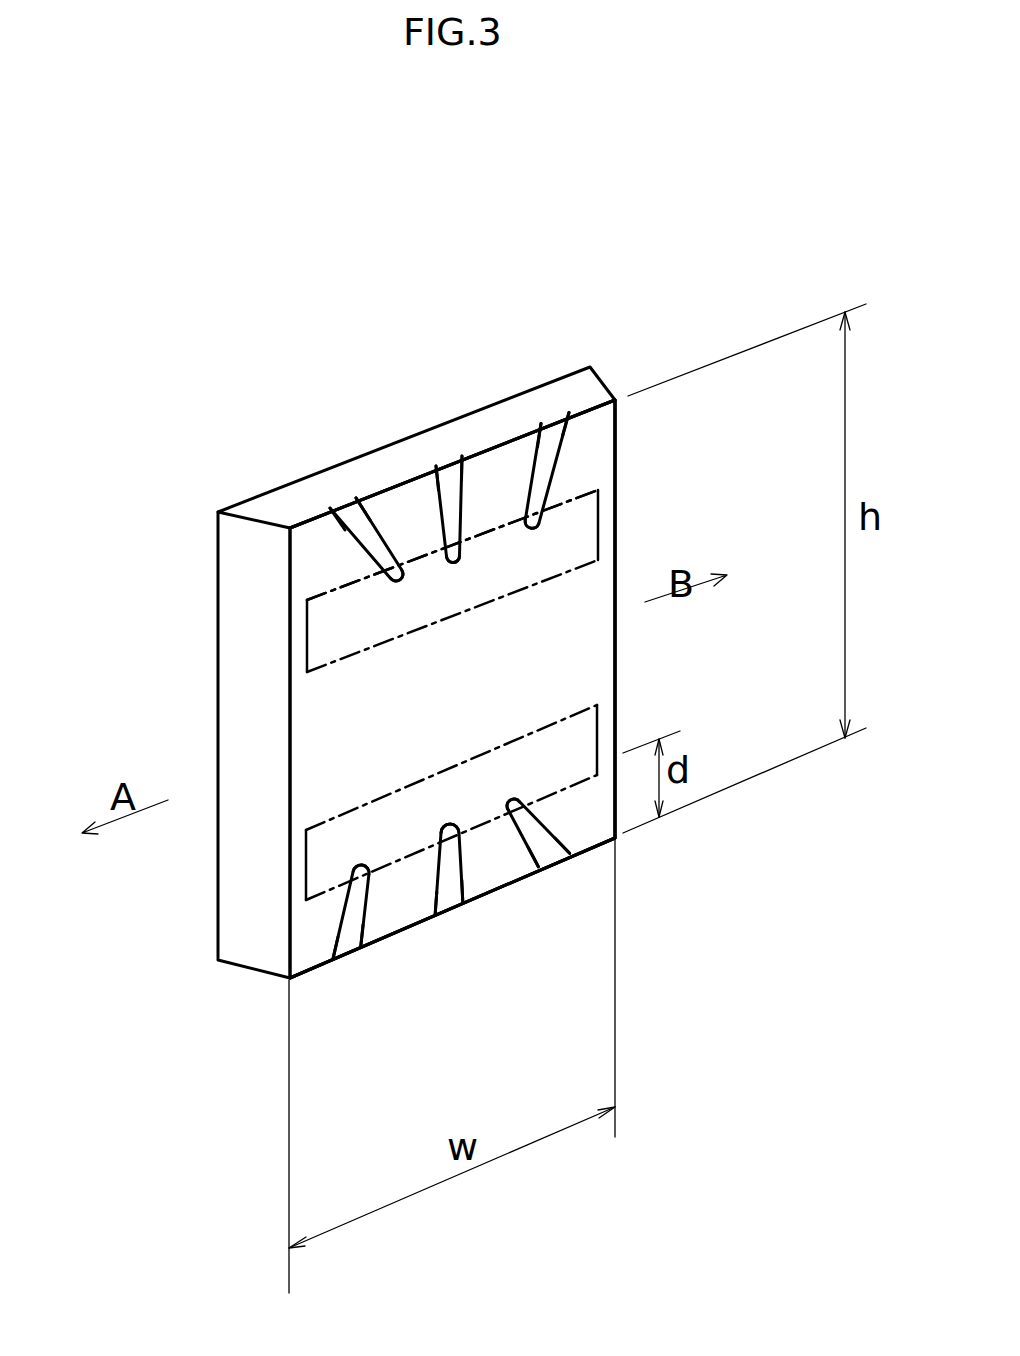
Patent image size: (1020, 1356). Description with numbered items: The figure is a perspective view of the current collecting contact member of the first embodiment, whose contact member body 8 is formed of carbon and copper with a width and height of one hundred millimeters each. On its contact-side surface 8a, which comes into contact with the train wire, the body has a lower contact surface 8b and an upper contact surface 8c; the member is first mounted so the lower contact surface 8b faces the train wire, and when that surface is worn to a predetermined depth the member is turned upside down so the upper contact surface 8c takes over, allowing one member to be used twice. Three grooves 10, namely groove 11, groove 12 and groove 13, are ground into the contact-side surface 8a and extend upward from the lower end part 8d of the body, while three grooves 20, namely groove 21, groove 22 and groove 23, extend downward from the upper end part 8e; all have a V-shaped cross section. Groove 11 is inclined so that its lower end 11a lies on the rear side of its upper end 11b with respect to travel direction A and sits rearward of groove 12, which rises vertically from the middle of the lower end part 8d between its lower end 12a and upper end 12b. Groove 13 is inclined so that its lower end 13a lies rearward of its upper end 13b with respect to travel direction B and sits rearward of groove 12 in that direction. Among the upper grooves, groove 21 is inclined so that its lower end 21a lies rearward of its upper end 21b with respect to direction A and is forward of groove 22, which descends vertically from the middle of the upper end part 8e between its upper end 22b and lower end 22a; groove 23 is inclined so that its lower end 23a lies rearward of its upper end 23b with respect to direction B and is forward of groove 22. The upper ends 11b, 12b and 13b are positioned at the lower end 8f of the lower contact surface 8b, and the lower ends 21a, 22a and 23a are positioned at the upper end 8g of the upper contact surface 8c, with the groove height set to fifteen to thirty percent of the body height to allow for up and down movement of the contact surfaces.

The contact member body 8 is at (233, 500).
The contact-side surface 8a is at (598, 662).
The lower contact surface 8b is at (602, 722).
The upper contact surface 8c is at (600, 542).
The lower end part 8d is at (614, 843).
The upper end part 8e is at (605, 380).
The lower end of the lower contact surface 8f is at (282, 965).
The upper end of the upper contact surface 8g is at (597, 488).
The grooves 10 is at (548, 1003).
The groove 11 is at (530, 862).
The lower end of groove 11 11a is at (558, 847).
The upper end of groove 11 11b is at (515, 802).
The groove 12 is at (443, 913).
The lower end of groove 12 12a is at (440, 907).
The upper end of groove 12 12b is at (448, 830).
The groove 13 is at (350, 945).
The lower end of groove 13 13a is at (353, 927).
The upper end of groove 13 13b is at (362, 870).
The grooves 20 is at (514, 260).
The groove 21 is at (345, 497).
The lower end of groove 21 21a is at (397, 580).
The upper end of groove 21 21b is at (333, 500).
The groove 22 is at (452, 462).
The lower end of groove 22 22a is at (454, 562).
The upper end of groove 22 22b is at (450, 478).
The groove 23 is at (553, 415).
The lower end of groove 23 23a is at (529, 528).
The upper end of groove 23 23b is at (565, 410).